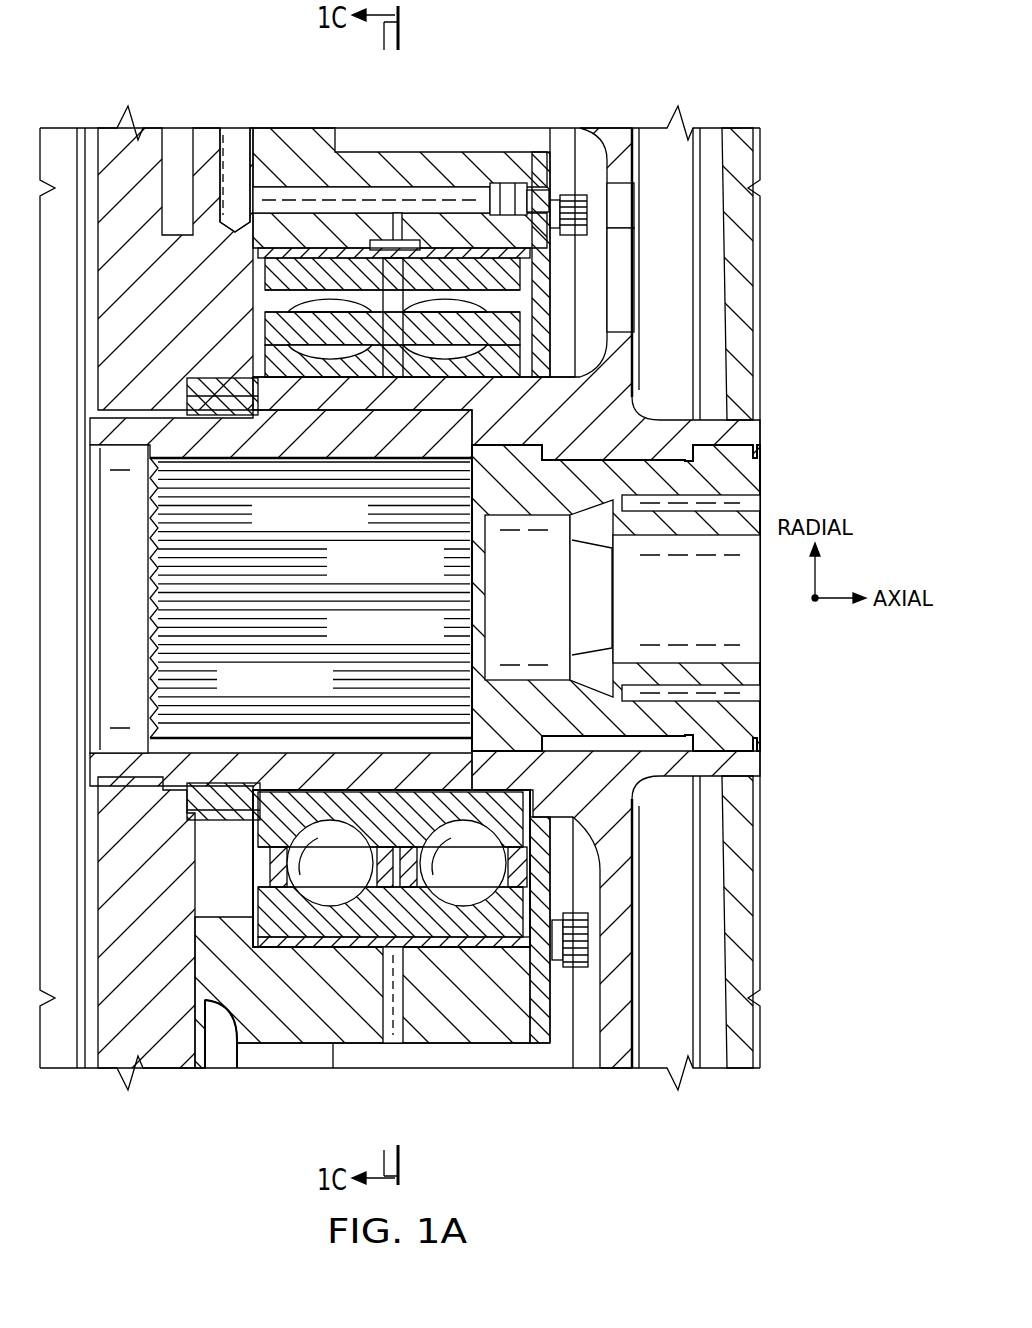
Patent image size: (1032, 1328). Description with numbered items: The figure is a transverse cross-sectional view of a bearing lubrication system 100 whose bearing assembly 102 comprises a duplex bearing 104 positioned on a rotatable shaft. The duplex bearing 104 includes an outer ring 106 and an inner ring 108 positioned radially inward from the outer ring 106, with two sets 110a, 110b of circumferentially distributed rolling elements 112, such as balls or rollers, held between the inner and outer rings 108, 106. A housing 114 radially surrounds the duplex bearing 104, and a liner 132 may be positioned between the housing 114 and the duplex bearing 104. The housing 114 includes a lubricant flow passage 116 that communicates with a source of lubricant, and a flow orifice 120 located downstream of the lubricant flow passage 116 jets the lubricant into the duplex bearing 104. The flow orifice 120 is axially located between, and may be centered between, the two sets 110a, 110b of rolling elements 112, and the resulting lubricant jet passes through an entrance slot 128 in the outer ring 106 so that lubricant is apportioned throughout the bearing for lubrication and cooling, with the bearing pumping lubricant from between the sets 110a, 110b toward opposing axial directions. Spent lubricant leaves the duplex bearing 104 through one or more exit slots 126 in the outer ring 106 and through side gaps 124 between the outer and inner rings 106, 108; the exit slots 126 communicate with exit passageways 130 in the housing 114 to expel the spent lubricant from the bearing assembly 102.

The bearing lubrication system 100 is at (190, 90).
The bearing assembly 102 is at (175, 598).
The duplex bearing 104 is at (440, 252).
The outer ring 106 is at (517, 270).
The inner ring 108 is at (522, 395).
The first set of rolling elements 110a is at (318, 357).
The second set of rolling elements 110b is at (430, 355).
The rolling elements 112 is at (311, 599).
The housing 114 is at (540, 165).
The lubricant flow passage 116 is at (290, 192).
The flow orifice 120 is at (435, 172).
The side gaps 124 is at (272, 292).
The exit slot 126 is at (382, 888).
The entrance slot 128 is at (398, 214).
The exit passageway 130 is at (400, 1020).
The liner 132 is at (252, 200).